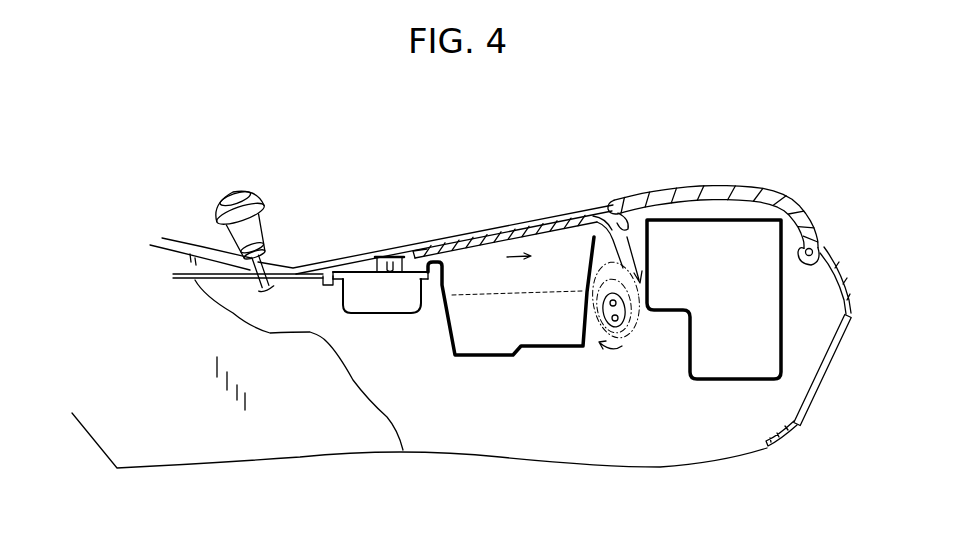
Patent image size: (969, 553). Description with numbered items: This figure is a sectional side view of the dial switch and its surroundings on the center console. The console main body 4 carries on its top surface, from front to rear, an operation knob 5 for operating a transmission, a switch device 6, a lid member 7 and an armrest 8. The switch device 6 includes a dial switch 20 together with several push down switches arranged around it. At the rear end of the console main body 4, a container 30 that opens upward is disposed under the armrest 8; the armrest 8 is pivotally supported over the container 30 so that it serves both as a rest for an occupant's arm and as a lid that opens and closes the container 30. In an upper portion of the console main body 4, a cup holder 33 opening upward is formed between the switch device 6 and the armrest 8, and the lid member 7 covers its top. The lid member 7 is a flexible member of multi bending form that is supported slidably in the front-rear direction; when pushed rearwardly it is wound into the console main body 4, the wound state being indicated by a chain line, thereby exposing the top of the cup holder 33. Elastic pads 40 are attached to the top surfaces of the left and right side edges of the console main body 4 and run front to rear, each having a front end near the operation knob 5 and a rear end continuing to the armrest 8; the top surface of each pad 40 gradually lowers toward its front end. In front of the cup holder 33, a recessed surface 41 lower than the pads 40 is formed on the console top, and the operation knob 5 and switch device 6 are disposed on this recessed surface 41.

The console main body 4 is at (503, 432).
The operation knob 5 is at (236, 192).
The switch device 6 is at (372, 288).
The lid member 7 is at (548, 234).
The armrest 8 is at (750, 190).
The dial switch 20 is at (382, 258).
The container 30 is at (727, 357).
The cup holder 33 is at (534, 320).
The pad 40 is at (490, 224).
The recessed surface 41 is at (362, 268).